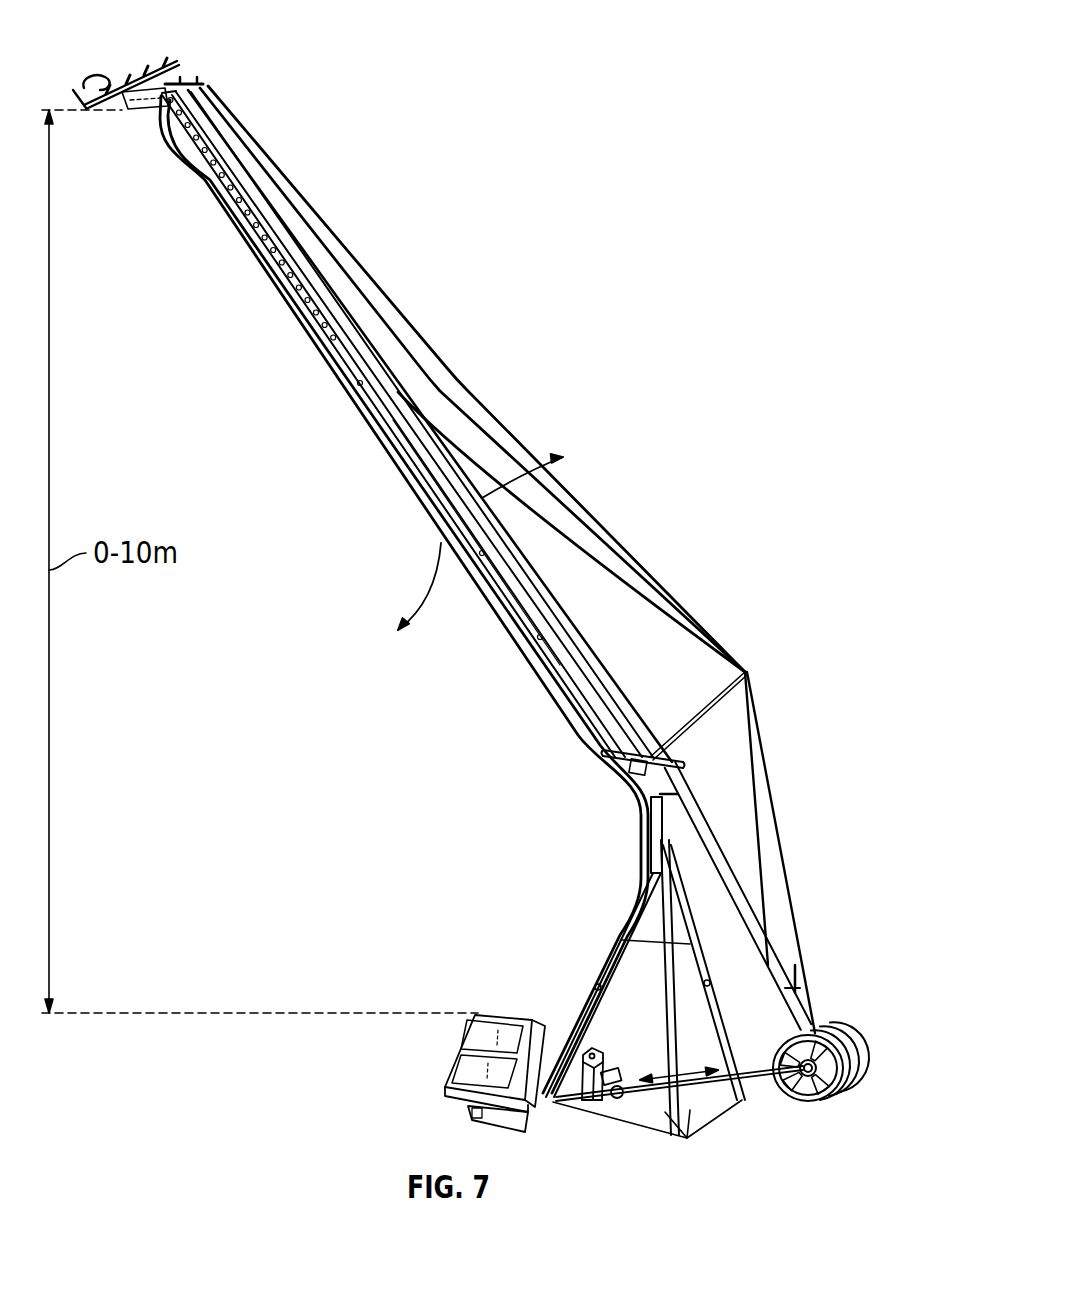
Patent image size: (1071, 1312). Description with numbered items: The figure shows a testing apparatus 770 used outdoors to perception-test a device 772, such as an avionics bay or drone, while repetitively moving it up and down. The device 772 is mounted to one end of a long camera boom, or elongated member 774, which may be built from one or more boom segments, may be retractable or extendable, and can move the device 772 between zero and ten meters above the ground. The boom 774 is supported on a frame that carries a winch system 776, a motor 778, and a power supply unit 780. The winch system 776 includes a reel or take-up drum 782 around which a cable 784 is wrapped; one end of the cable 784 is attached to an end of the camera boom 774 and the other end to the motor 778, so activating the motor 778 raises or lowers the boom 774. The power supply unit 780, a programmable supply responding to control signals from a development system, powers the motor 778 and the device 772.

The testing apparatus 770 is at (740, 108).
The device 772 is at (120, 55).
The camera boom 774 is at (302, 254).
The winch system 776 is at (858, 1010).
The motor 778 is at (603, 1033).
The power supply unit 780 is at (468, 1000).
The take-up drum 782 is at (825, 1102).
The cable 784 is at (760, 1083).